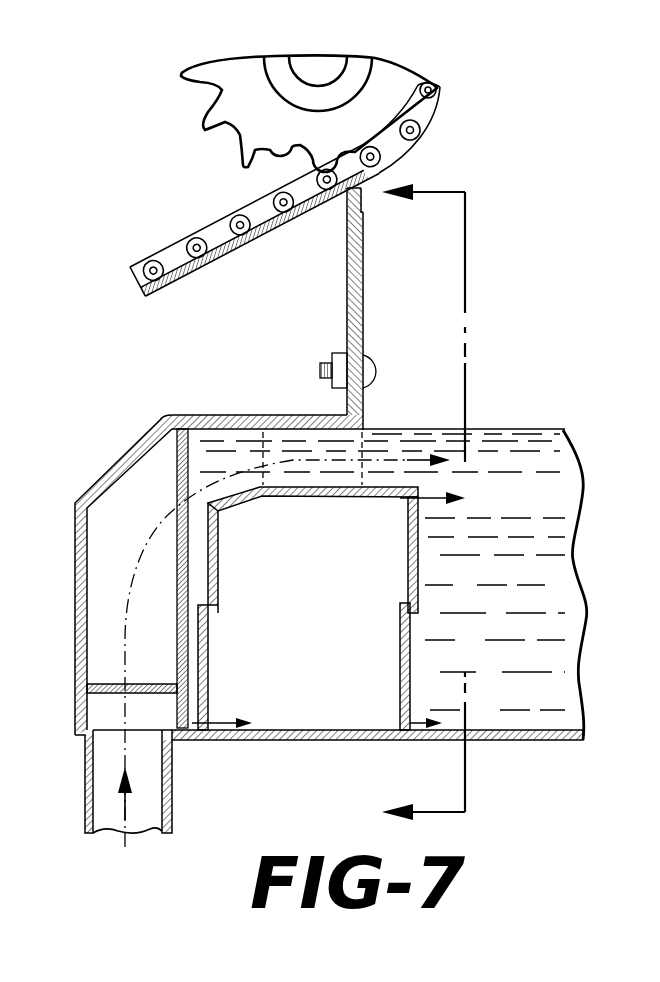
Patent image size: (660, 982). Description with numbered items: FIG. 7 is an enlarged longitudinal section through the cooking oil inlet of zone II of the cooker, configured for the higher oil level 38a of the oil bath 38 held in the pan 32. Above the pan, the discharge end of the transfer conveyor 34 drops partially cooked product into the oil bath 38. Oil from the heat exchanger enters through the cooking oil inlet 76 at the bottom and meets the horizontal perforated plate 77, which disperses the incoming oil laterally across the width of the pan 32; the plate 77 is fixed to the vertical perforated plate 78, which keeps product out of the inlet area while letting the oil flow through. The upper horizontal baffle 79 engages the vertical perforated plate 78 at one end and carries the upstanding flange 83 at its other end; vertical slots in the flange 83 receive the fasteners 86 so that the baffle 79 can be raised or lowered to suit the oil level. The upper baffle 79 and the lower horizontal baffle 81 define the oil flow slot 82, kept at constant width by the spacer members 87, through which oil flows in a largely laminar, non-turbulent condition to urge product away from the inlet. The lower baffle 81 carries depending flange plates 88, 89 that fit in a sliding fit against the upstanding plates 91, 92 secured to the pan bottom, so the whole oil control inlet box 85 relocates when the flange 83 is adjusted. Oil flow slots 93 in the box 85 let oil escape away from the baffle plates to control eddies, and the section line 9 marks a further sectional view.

The section line 9- 9 is at (423, 502).
The pan 32 is at (518, 740).
The transfer conveyor 34 is at (277, 213).
The oil bath 38 is at (563, 623).
The higher oil level 38a is at (521, 429).
The cooking oil inlet 76 is at (123, 805).
The perforated plate 77 is at (100, 683).
The vertical perforated plate 78 is at (177, 495).
The upper horizontal baffle 79 is at (300, 435).
The lower horizontal baffle 81 is at (307, 500).
The oil flow slot 82 is at (350, 497).
The upstanding flange 83 is at (363, 318).
The oil control inlet box 85 is at (292, 622).
The fasteners 86 is at (372, 370).
The spacer members 87 is at (377, 427).
The flange plate 88 is at (219, 577).
The flange plate 89 is at (410, 567).
The upstanding plate 91 is at (208, 663).
The upstanding plate 92 is at (402, 635).
The oil flow slots 93 is at (423, 503).